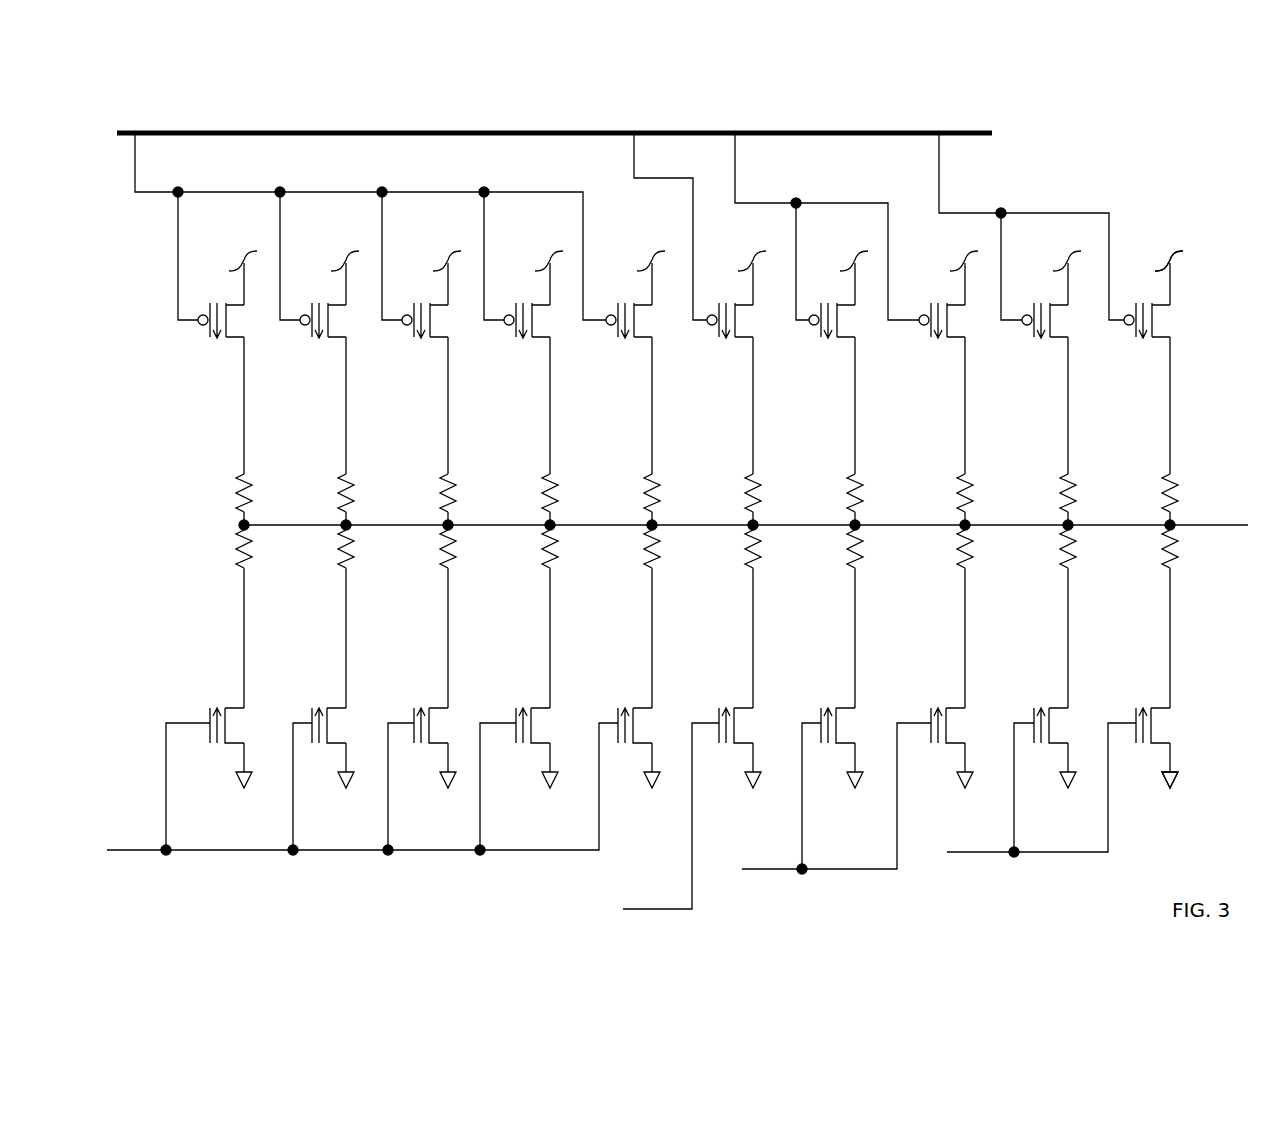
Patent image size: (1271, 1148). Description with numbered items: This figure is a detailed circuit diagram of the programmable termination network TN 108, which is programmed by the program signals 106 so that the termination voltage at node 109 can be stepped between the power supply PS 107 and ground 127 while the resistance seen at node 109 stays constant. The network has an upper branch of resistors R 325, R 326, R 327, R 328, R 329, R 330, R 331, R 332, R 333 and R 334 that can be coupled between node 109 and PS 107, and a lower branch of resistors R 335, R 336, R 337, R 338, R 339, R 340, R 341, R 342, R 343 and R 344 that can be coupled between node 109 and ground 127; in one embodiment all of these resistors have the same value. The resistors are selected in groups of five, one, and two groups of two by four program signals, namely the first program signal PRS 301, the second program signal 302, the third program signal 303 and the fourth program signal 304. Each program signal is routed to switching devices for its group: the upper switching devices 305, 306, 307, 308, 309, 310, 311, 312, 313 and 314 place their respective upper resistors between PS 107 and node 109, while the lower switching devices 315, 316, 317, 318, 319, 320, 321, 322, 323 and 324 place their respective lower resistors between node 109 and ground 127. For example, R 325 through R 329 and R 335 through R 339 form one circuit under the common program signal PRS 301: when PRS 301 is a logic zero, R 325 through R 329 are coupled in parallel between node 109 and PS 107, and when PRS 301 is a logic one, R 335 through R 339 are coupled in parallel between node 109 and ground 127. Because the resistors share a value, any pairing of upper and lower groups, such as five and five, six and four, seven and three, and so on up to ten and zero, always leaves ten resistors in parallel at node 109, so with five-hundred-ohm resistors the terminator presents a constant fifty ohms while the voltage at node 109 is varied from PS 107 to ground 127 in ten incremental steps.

The program signals 106 is at (220, 131).
The PS 107 is at (1168, 268).
The termination network 108 is at (771, 106).
The node 109 is at (1217, 530).
The ground 127 is at (1183, 766).
The program signal PRS 301 is at (243, 888).
The program signal P2 302 is at (640, 908).
The program signal P3 303 is at (777, 868).
The program signal P4 304 is at (995, 852).
The PMOS transistor 305 is at (218, 338).
The PMOS transistor 306 is at (320, 338).
The PMOS transistor 307 is at (422, 338).
The PMOS transistor 308 is at (524, 338).
The PMOS transistor 309 is at (626, 338).
The PMOS transistor 310 is at (727, 338).
The PMOS transistor 311 is at (829, 338).
The PMOS transistor 312 is at (939, 338).
The PMOS transistor 313 is at (1042, 338).
The PMOS transistor 314 is at (1144, 338).
The NMOS transistor 315 is at (227, 708).
The NMOS transistor (labeled 315 in drawing) 316 is at (329, 708).
The NMOS transistor 317 is at (431, 708).
The NMOS transistor 318 is at (533, 708).
The NMOS transistor 319 is at (635, 708).
The NMOS transistor 320 is at (736, 708).
The NMOS transistor 321 is at (838, 708).
The NMOS transistor 322 is at (948, 708).
The NMOS transistor 323 is at (1051, 708).
The NMOS transistor 324 is at (1153, 708).
The resistor R 325 is at (248, 482).
The resistor R 326 is at (350, 482).
The resistor R 327 is at (452, 482).
The resistor R 328 is at (554, 482).
The resistor R 329 is at (656, 482).
The resistor R 330 is at (757, 482).
The resistor R 331 is at (859, 482).
The resistor R 332 is at (969, 482).
The resistor R 333 is at (1072, 482).
The resistor R 334 is at (1174, 482).
The resistor R 335 is at (236, 545).
The resistor R 336 is at (338, 545).
The resistor R 337 is at (440, 545).
The resistor R 338 is at (542, 545).
The resistor R 339 is at (644, 545).
The resistor R 340 is at (745, 545).
The resistor R 341 is at (847, 545).
The resistor R 342 is at (957, 545).
The resistor R 343 is at (1060, 545).
The resistor R 344 is at (1162, 545).